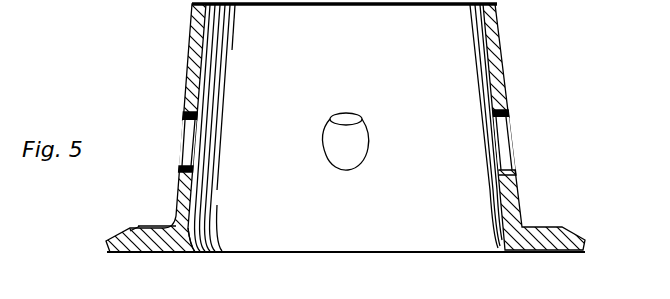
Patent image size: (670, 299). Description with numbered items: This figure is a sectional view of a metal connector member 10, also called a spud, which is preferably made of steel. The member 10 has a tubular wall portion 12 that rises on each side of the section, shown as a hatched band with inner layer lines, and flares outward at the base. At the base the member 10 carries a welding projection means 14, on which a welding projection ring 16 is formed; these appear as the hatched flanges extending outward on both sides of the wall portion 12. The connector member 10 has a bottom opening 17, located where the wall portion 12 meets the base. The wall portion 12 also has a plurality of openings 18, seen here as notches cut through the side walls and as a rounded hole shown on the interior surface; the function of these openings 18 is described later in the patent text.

The metal connector member 10 is at (333, 147).
The tubular wall portion 12 is at (200, 52).
The welding projection means 14 is at (135, 256).
The welding projection ring 16 is at (134, 226).
The bottom opening 17 is at (206, 253).
The openings 18 is at (186, 137).